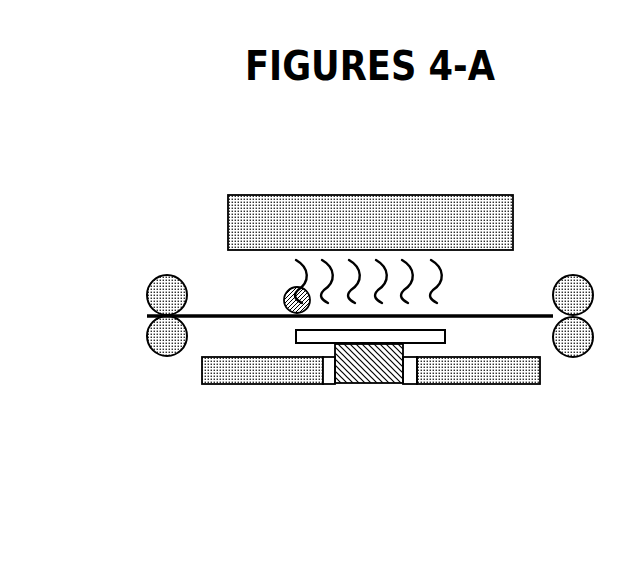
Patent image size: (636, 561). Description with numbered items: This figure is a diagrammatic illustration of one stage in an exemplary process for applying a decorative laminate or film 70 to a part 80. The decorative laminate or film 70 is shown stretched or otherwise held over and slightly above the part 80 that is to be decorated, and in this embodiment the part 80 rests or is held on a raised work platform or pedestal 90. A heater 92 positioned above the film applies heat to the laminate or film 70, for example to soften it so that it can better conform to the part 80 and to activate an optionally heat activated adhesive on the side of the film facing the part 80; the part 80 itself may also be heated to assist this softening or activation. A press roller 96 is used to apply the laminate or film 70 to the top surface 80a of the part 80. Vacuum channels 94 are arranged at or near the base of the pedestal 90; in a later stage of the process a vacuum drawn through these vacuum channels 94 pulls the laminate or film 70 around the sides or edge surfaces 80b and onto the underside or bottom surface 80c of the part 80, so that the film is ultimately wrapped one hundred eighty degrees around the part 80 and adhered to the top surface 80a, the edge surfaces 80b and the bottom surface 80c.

The decorative laminate or film 70 is at (508, 313).
The part 80 is at (415, 339).
The top surface 80a is at (437, 330).
The sides or edge surfaces 80b is at (297, 336).
The underside or bottom surface 80c is at (428, 343).
The raised work platform or pedestal 90 is at (373, 372).
The heater 92 is at (320, 202).
The vacuum channels 94 is at (332, 365).
The press roller 96 is at (307, 291).